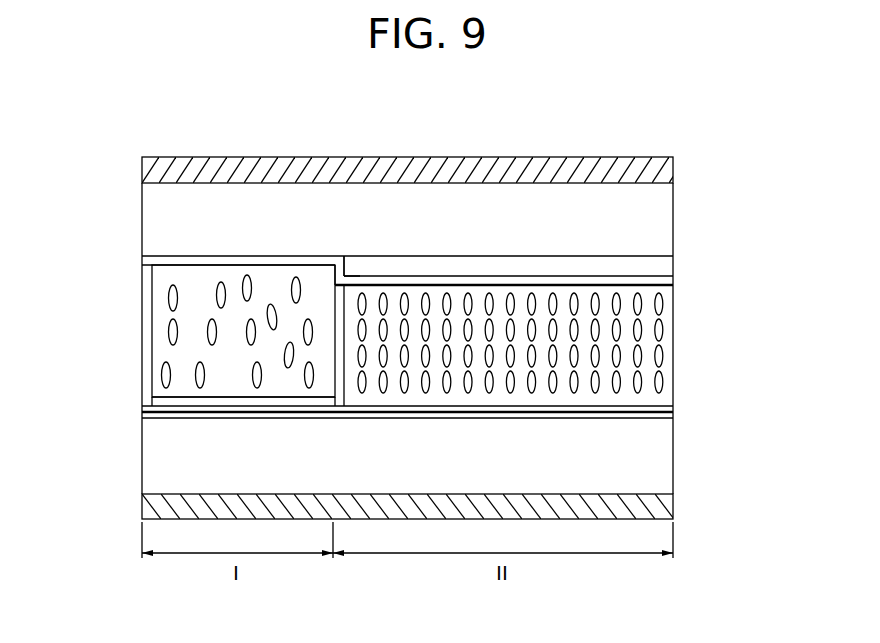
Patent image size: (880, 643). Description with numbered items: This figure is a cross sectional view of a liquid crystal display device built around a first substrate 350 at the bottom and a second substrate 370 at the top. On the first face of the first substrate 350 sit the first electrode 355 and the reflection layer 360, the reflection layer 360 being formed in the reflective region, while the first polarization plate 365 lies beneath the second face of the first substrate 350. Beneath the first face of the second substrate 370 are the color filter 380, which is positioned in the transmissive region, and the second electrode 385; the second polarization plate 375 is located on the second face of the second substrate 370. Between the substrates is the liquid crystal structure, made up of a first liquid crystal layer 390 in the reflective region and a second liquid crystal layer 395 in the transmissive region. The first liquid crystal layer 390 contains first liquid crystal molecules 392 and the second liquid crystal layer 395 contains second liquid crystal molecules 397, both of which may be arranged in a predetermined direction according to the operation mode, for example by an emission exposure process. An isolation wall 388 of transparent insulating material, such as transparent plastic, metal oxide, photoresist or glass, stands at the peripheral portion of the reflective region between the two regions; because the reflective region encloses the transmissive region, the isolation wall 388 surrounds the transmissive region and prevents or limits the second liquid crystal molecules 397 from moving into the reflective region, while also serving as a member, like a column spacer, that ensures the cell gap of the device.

The first substrate 350 is at (666, 460).
The first electrode 355 is at (668, 413).
The reflection layer 360 is at (152, 402).
The first polarization plate 365 is at (666, 508).
The second substrate 370 is at (668, 204).
The second polarization plate 375 is at (673, 172).
The color filter 380 is at (668, 265).
The second electrode 385 is at (668, 283).
The isolation wall 388 is at (337, 287).
The first liquid crystal layer 390 is at (183, 335).
The first liquid crystal molecules 392 is at (168, 331).
The second liquid crystal layer 395 is at (567, 346).
The second liquid crystal molecules 397 is at (662, 330).